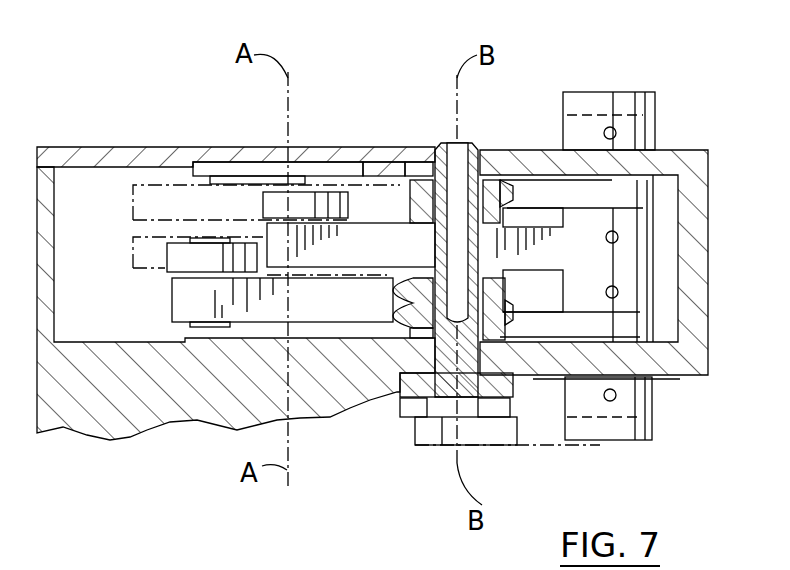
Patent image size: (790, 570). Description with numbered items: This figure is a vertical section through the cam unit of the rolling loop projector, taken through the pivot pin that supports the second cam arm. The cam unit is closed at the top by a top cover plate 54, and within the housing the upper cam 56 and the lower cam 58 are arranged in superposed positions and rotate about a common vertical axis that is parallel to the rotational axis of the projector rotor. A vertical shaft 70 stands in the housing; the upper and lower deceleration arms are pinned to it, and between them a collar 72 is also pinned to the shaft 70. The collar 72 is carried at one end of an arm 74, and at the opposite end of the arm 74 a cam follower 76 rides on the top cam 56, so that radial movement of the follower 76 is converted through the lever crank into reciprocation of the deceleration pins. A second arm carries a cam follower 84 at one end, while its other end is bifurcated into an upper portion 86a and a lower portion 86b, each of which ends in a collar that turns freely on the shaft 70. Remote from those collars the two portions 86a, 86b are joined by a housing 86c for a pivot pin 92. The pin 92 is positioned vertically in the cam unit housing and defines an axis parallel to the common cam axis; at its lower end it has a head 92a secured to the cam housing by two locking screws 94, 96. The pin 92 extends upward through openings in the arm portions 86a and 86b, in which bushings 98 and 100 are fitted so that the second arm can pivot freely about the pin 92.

The top cover plate 54 is at (192, 148).
The upper cam 56 is at (148, 201).
The lower cam 58 is at (148, 252).
The vertical shaft 70 is at (602, 92).
The collar 72 is at (640, 237).
The arm 74 is at (372, 259).
The cam follower 76 is at (326, 164).
The cam follower 84 is at (170, 258).
The upper portion of arm 86 86a is at (525, 192).
The lower portion of arm 86 86b is at (535, 325).
The pivot pin housing 86c is at (405, 290).
The pivot pin 92 is at (445, 405).
The head 92a is at (517, 392).
The locking screw 94 is at (403, 417).
The locking screw 96 is at (500, 420).
The bushing 98 is at (401, 162).
The bushing 100 is at (412, 335).